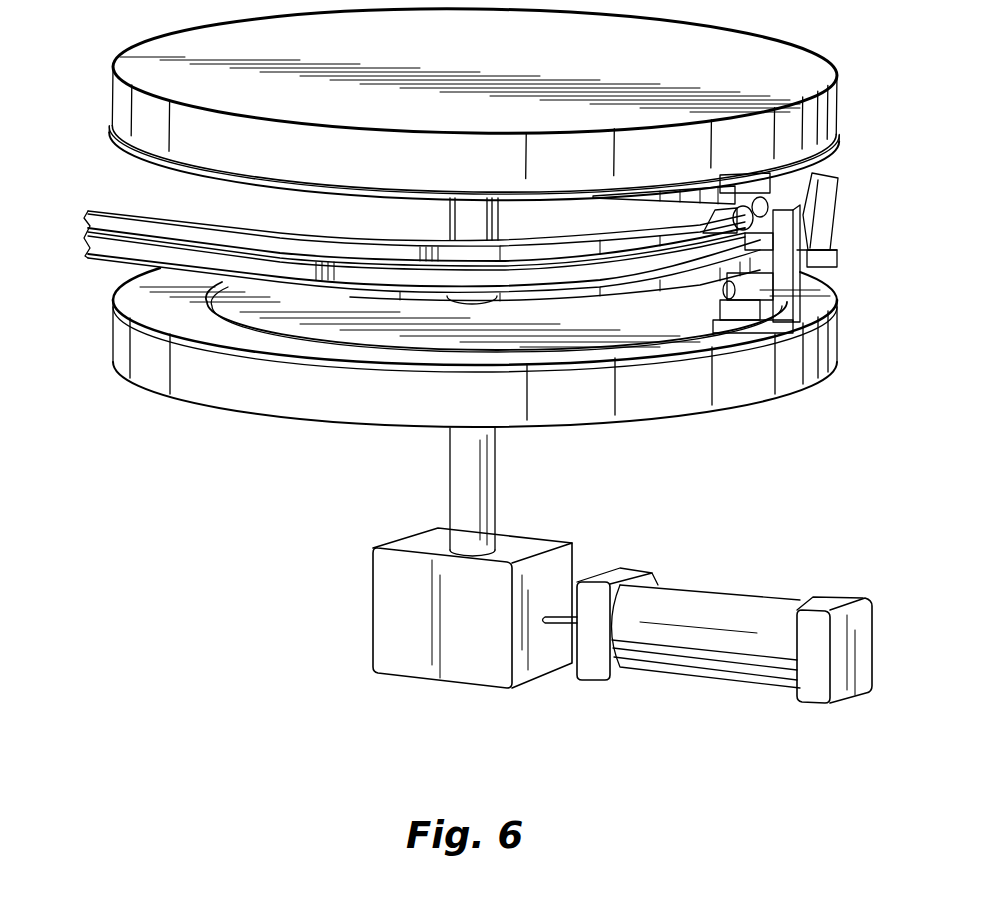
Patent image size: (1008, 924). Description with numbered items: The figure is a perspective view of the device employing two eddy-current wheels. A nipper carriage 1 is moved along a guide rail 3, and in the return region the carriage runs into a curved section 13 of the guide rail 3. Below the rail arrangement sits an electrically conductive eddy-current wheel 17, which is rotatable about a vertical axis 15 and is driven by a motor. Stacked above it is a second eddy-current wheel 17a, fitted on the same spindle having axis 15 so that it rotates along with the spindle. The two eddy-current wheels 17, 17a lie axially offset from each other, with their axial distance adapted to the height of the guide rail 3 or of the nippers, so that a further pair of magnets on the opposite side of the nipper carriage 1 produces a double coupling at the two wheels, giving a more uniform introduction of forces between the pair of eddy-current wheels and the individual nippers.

The nipper carriage 1 is at (848, 214).
The guide rail 3 is at (139, 232).
The curved section 13 is at (615, 275).
The vertical axis 15 is at (488, 490).
The eddy-current wheel 17 is at (153, 375).
The second eddy-current wheel 17a is at (113, 100).